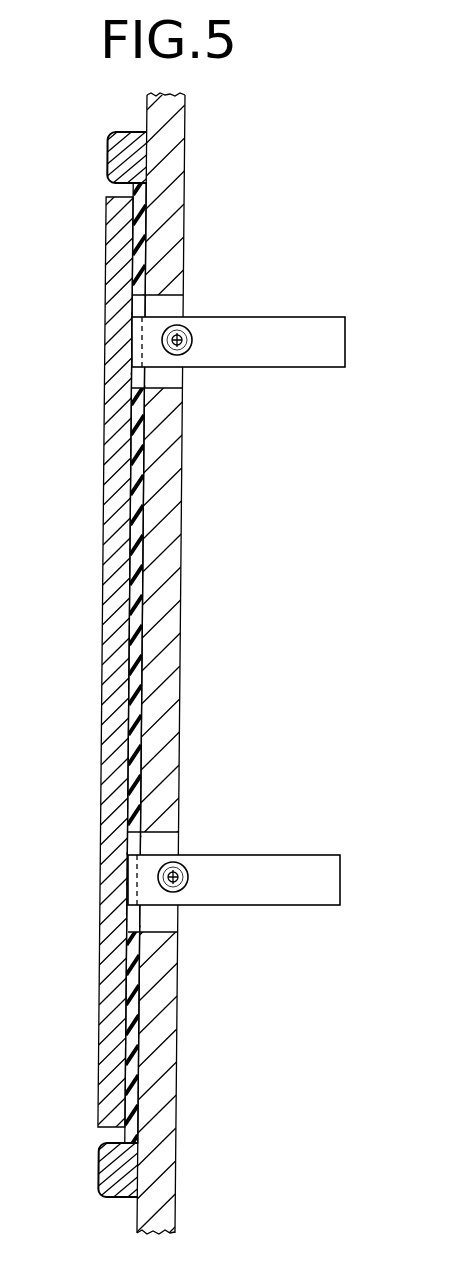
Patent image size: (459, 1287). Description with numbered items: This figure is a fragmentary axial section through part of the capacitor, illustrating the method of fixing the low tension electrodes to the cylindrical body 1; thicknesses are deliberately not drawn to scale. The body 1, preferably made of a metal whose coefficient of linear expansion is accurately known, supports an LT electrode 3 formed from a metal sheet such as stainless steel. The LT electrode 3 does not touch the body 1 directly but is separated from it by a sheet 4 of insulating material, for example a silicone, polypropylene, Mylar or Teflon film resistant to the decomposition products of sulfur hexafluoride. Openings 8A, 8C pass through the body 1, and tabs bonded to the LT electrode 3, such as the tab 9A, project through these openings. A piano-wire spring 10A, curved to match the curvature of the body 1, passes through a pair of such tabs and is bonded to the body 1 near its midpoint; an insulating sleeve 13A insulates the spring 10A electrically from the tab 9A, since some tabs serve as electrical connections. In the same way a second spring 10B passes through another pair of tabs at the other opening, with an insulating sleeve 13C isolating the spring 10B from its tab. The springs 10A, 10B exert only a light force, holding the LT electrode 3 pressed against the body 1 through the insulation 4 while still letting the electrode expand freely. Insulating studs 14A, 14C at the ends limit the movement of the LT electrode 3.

The outer cylindrical body 1 is at (172, 645).
The LT electrode 3 is at (112, 635).
The sheet of insulating material 4 is at (137, 718).
The opening 8A is at (163, 302).
The opening 8C is at (157, 842).
The tab 9A is at (283, 322).
The spring 10A is at (178, 330).
The spring 10B is at (175, 864).
The insulating sleeve 13A is at (192, 349).
The insulating sleeve 13C is at (186, 887).
The insulating stud 14A is at (122, 156).
The insulating stud 14C is at (108, 1175).